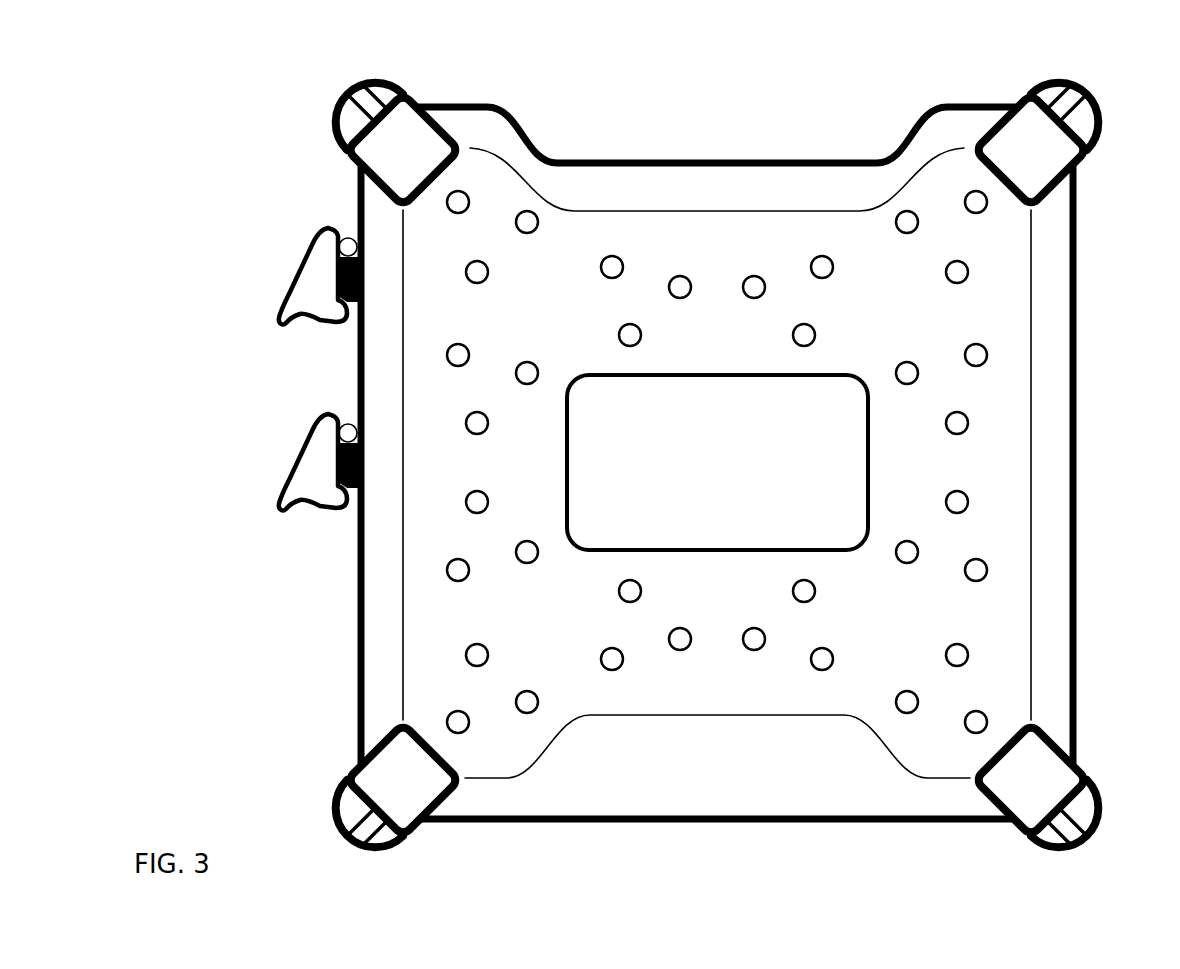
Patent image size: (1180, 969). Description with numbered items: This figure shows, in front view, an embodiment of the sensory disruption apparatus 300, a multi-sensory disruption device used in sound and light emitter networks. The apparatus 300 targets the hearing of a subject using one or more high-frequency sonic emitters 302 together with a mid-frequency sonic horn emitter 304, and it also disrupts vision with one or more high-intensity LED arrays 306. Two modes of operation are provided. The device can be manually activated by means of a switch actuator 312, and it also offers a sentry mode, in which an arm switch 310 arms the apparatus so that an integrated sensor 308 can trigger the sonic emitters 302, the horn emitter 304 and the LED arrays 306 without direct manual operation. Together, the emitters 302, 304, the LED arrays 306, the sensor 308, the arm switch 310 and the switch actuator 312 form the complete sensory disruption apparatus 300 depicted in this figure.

The sensory disruption apparatus 300 is at (1098, 350).
The high-frequency sonic emitter 302 is at (991, 572).
The mid-frequency sonic horn emitter 304 is at (871, 451).
The high-intensity LED array 306 is at (356, 763).
The integrated sensor 308 is at (797, 160).
The arm switch 310 is at (285, 284).
The switch actuator 312 is at (285, 465).